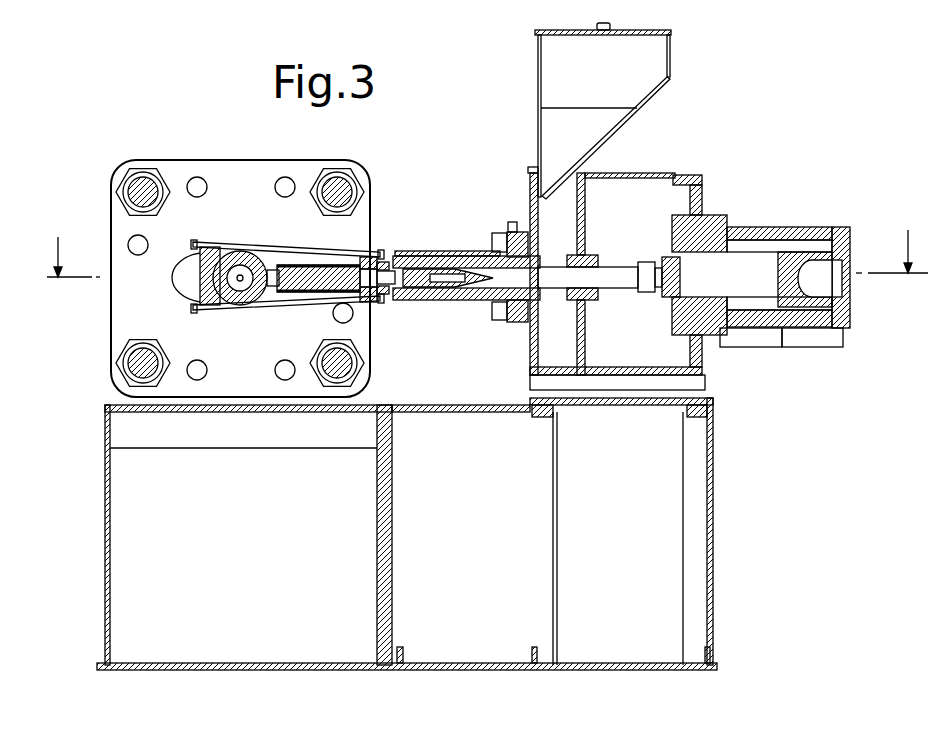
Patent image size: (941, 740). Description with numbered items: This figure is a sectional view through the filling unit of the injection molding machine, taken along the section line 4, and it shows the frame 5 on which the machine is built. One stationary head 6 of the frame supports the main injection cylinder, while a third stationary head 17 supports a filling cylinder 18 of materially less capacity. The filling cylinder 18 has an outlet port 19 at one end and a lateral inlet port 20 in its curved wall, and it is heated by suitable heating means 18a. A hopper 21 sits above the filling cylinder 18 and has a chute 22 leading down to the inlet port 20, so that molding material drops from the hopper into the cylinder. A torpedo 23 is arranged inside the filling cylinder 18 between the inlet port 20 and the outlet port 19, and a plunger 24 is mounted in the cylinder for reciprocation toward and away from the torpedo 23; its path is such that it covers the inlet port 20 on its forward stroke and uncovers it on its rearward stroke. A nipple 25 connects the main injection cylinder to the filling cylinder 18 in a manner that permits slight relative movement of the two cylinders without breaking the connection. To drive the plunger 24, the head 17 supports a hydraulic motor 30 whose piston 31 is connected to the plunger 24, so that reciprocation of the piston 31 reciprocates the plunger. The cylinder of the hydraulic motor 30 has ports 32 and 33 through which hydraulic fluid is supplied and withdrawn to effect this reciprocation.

The section line 4- 4 is at (487, 253).
The frame 5 is at (105, 406).
The stationary head 6 is at (174, 160).
The third stationary head 17 is at (703, 186).
The filling cylinder 18 is at (513, 322).
The heating means 18a is at (440, 254).
The outlet port 19 is at (386, 297).
The lateral inlet port 20 is at (582, 252).
The hopper 21 is at (651, 97).
The chute 22 is at (528, 212).
The torpedo 23 is at (423, 267).
The plunger 24 is at (605, 278).
The nipple 25 is at (317, 266).
The hydraulic motor 30 is at (772, 228).
The piston 31 is at (733, 266).
The port 32 is at (734, 330).
The port 33 is at (823, 330).